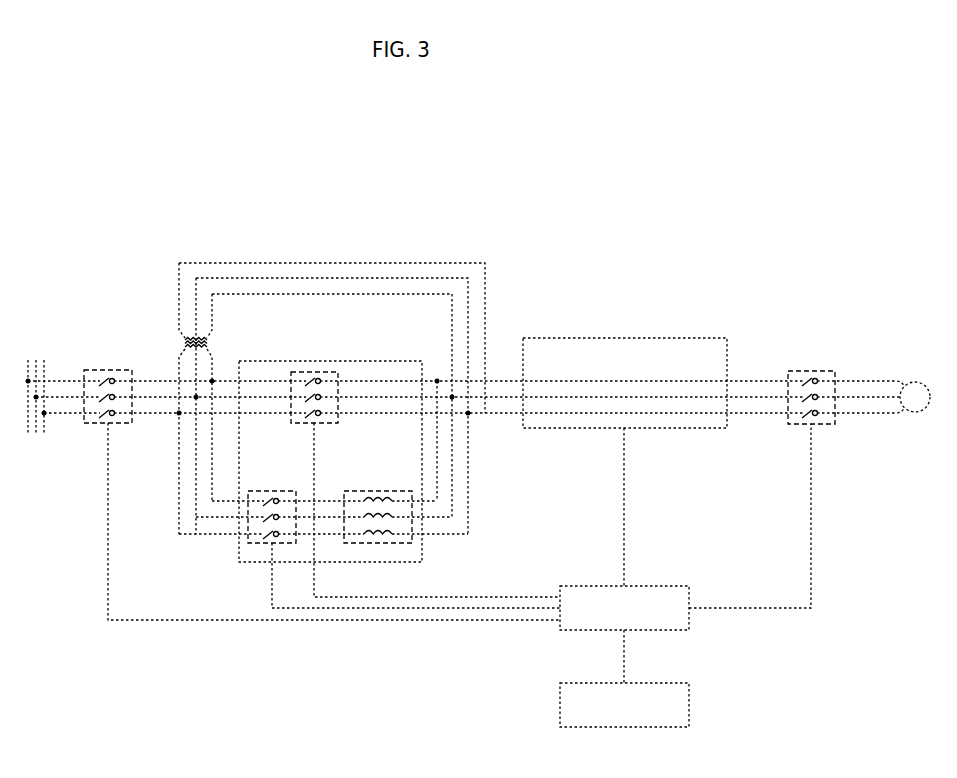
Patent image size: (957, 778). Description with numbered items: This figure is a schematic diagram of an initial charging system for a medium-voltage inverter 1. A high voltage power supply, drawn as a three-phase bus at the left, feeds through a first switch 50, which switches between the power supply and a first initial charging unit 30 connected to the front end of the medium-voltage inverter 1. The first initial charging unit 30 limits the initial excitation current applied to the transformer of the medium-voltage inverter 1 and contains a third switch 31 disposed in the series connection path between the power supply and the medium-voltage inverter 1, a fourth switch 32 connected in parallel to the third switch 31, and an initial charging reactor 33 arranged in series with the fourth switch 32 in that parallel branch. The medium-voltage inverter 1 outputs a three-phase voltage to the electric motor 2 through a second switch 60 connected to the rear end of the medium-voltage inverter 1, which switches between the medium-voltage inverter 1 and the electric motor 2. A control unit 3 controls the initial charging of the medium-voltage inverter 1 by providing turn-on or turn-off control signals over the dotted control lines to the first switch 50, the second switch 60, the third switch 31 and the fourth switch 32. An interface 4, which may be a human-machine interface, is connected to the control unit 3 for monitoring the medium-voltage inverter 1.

The medium-voltage inverter 1 is at (624, 338).
The electric motor 2 is at (915, 382).
The control unit 3 is at (660, 586).
The interface 4 is at (660, 683).
The first initial charging unit 30 is at (410, 361).
The third switch 31 is at (314, 372).
The fourth switch 32 is at (272, 491).
The initial charging reactor 33 is at (378, 491).
The first switch 50 is at (107, 370).
The second switch 60 is at (811, 371).